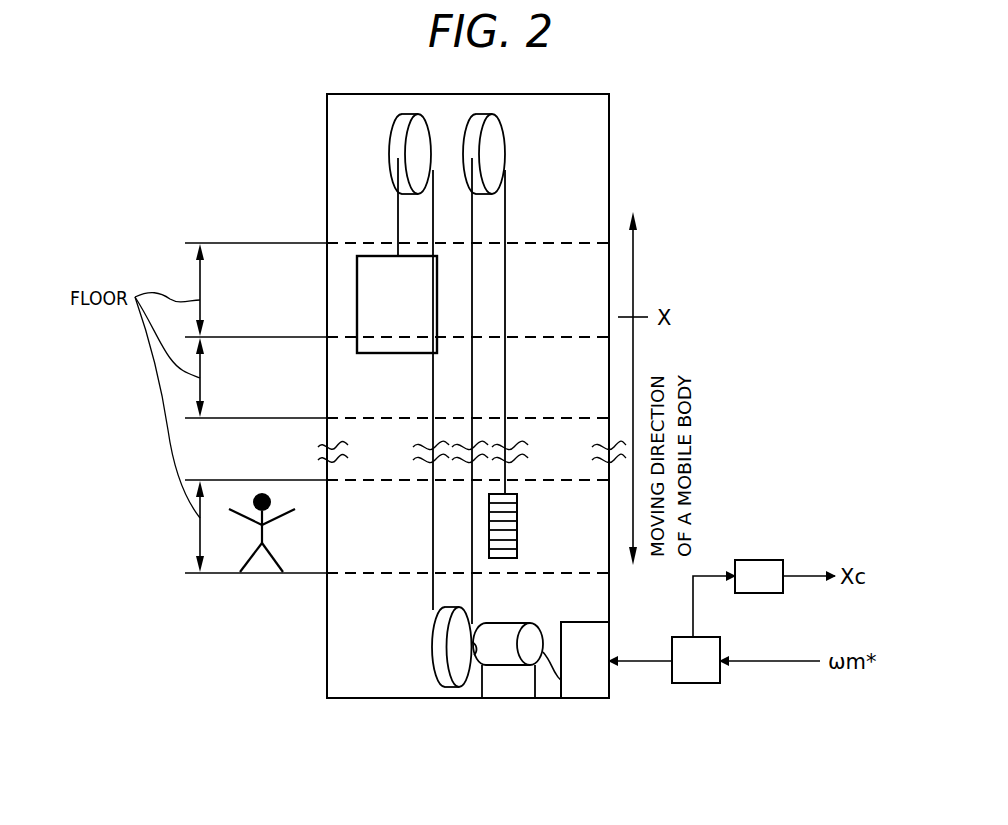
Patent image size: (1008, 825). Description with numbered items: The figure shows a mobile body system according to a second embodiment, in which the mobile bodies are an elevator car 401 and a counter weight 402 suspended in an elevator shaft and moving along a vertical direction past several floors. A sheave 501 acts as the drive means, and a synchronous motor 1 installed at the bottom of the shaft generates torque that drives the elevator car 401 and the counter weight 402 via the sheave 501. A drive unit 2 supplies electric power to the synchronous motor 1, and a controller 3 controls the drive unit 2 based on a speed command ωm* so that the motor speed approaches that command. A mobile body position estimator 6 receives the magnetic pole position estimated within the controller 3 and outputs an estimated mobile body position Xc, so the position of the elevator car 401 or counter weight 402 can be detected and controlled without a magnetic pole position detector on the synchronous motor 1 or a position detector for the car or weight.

The synchronous motor 1 is at (500, 698).
The drive unit 2 is at (587, 698).
The controller 3 is at (700, 683).
The mobile body position estimator 6 is at (760, 560).
The elevator car 401 is at (437, 306).
The counter weight 402 is at (517, 525).
The sheave 501 is at (446, 686).